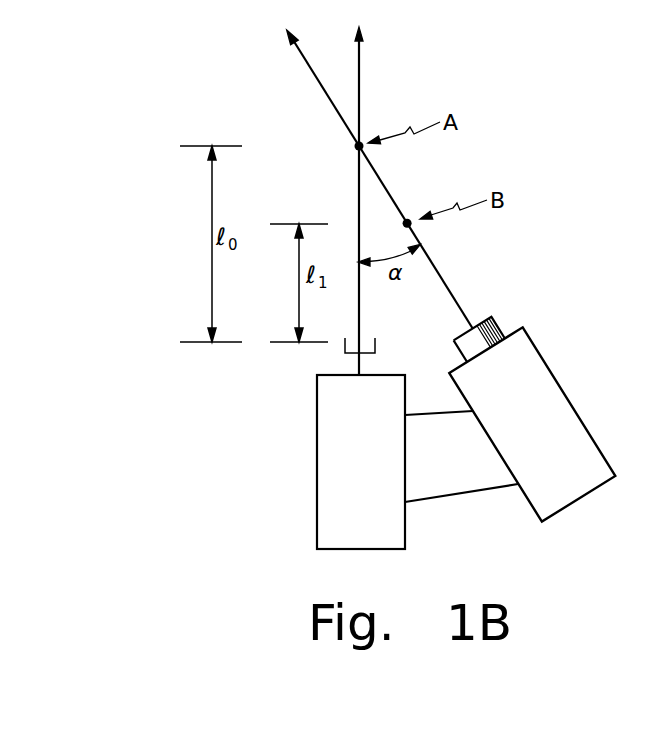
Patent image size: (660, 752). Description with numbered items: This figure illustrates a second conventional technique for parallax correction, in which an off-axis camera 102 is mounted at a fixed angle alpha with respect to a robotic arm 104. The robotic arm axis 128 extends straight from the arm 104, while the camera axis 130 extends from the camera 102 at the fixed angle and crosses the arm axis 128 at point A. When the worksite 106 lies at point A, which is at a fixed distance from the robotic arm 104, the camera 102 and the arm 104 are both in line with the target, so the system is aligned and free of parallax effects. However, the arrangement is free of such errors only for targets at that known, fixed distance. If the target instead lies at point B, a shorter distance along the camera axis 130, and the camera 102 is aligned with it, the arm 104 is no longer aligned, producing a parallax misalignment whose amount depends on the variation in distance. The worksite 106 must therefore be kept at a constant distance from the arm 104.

The camera 102 is at (568, 400).
The robotic arm 104 is at (317, 445).
The worksite 106 is at (355, 146).
The robotic arm axis 128 is at (358, 189).
The camera axis 130 is at (451, 293).